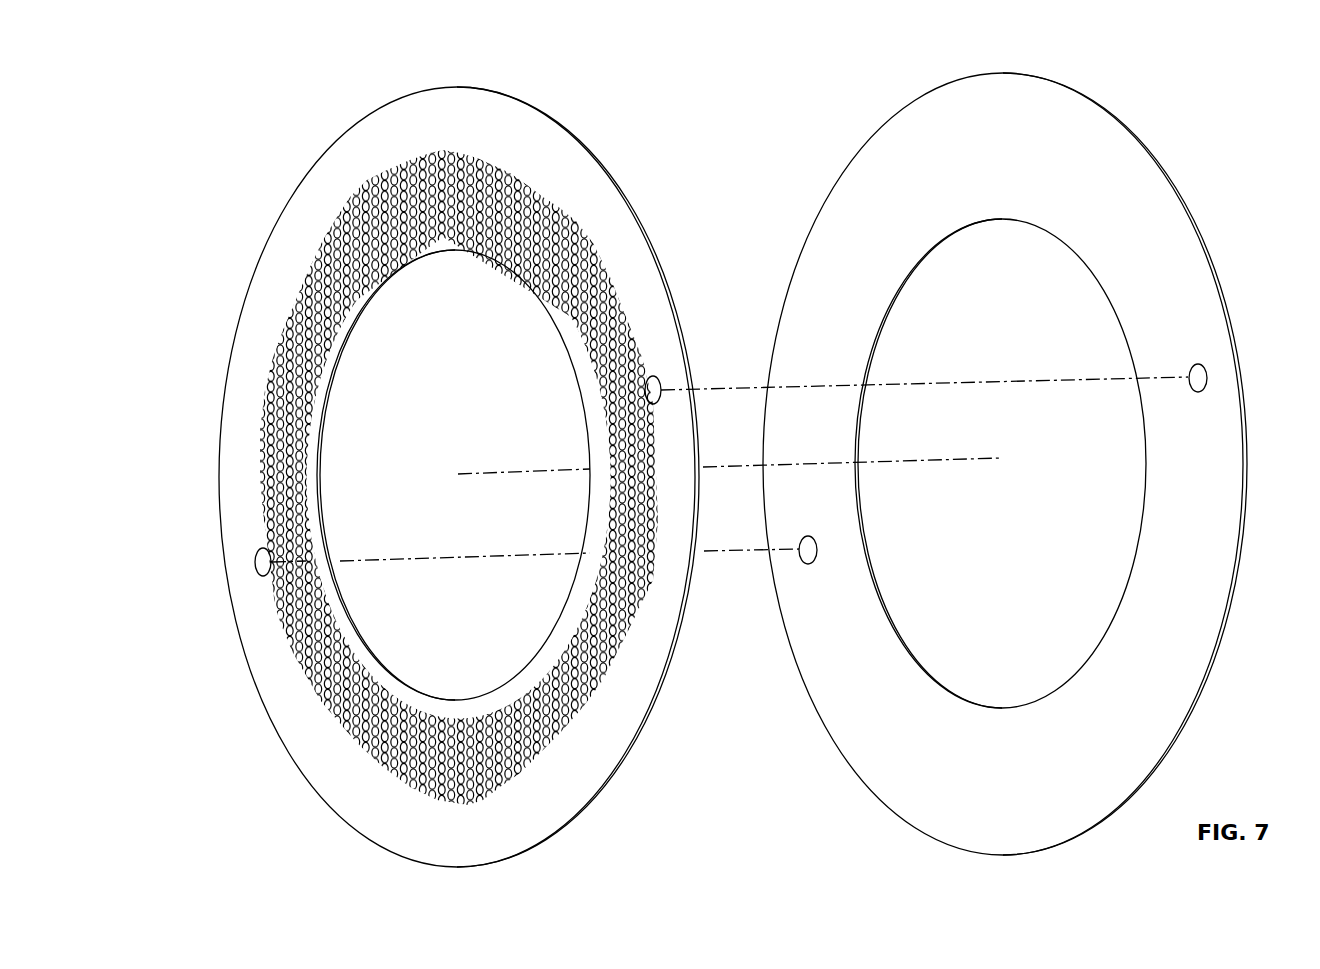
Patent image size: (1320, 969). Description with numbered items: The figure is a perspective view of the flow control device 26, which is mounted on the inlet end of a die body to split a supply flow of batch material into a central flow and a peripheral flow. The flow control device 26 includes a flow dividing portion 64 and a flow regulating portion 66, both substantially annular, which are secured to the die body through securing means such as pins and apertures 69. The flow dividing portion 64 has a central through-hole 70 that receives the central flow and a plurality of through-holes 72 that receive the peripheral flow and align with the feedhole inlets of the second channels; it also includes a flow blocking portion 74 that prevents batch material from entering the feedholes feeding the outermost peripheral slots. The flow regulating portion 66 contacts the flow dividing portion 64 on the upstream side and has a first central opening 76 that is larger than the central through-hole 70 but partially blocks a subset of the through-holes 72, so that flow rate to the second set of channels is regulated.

The flow control device 26 is at (1197, 105).
The flow dividing portion 64 is at (624, 160).
The flow regulating portion 66 is at (832, 159).
The apertures 69 is at (668, 380).
The central through-hole 70 is at (461, 400).
The plurality of through-holes 72 is at (597, 244).
The flow blocking portion 74 is at (440, 243).
The first central opening 76 is at (1010, 358).